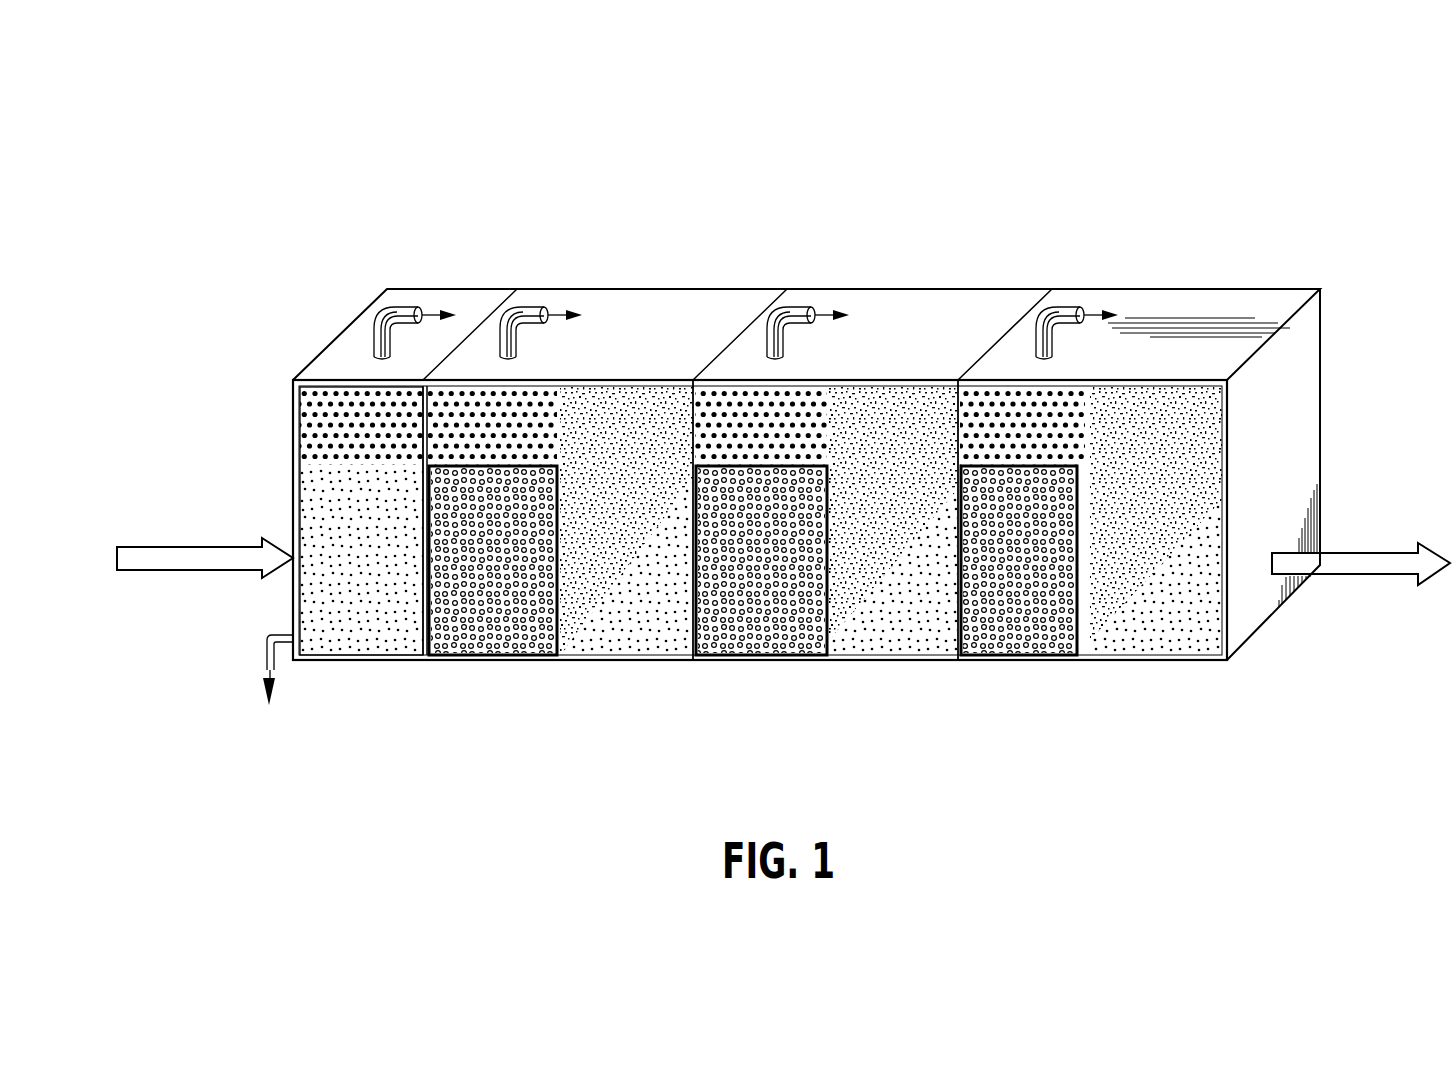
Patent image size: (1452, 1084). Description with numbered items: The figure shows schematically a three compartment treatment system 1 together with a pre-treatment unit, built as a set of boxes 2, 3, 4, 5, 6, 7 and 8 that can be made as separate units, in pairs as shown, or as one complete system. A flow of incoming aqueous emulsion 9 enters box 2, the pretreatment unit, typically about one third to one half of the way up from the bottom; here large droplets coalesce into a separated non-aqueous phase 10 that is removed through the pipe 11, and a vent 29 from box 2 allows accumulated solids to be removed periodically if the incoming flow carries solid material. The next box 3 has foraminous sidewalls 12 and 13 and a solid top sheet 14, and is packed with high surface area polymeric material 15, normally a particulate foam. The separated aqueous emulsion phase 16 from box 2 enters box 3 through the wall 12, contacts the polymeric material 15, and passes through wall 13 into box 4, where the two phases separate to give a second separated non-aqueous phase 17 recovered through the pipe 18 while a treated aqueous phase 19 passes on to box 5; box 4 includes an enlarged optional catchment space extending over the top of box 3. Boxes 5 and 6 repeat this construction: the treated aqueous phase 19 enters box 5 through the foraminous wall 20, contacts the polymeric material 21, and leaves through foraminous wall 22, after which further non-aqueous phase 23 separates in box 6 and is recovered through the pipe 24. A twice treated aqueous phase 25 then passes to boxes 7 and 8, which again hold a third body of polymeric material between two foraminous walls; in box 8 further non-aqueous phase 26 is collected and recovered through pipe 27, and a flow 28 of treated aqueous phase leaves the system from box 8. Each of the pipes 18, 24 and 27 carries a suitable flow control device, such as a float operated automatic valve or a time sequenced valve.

The treatment system 1 is at (877, 285).
The box 2 is at (311, 595).
The box 3 is at (536, 517).
The box 4 is at (643, 506).
The box 5 is at (757, 600).
The box 6 is at (904, 510).
The box 7 is at (1087, 465).
The box 8 is at (1162, 660).
The incoming aqueous emulsion flow 9 is at (172, 547).
The separated non-aqueous phase 10 is at (340, 423).
The pipe 11 is at (403, 308).
The foraminous sidewall 12 is at (420, 600).
The foraminous sidewall 13 is at (543, 620).
The solid top sheet 14 is at (530, 457).
The high surface area polymeric material 15 is at (478, 590).
The separated aqueous emulsion phase 16 is at (365, 585).
The second separated non-aqueous phase 17 is at (642, 437).
The pipe 18 is at (527, 308).
The treated aqueous phase 19 is at (615, 605).
The foraminous wall 20 is at (690, 600).
The polymeric material 21 is at (755, 560).
The foraminous wall 22 is at (815, 600).
The non-aqueous phase 23 is at (890, 437).
The pipe 24 is at (800, 308).
The twice treated aqueous phase 25 is at (925, 610).
The non-aqueous phase 26 is at (1068, 413).
The pipe 27 is at (1062, 308).
The treated aqueous phase flow 28 is at (1368, 560).
The vent 29 is at (265, 646).